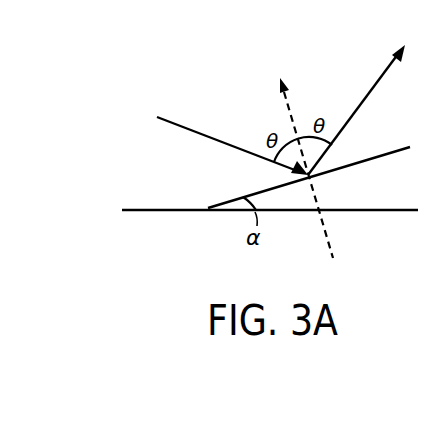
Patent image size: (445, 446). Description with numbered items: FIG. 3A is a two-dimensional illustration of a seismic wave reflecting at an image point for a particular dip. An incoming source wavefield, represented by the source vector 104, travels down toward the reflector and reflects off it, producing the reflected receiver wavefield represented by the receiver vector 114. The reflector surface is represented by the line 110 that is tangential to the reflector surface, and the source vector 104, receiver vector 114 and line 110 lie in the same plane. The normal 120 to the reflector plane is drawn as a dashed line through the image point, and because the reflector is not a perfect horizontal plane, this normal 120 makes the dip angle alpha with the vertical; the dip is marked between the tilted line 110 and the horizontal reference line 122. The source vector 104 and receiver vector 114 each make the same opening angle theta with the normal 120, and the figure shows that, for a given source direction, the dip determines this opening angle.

The source vector 104 is at (188, 128).
The line tangential to the reflector surface 110 is at (373, 160).
The receiver vector 114 is at (383, 72).
The normal 120 is at (283, 102).
The horizontal reference plane 122 is at (150, 212).